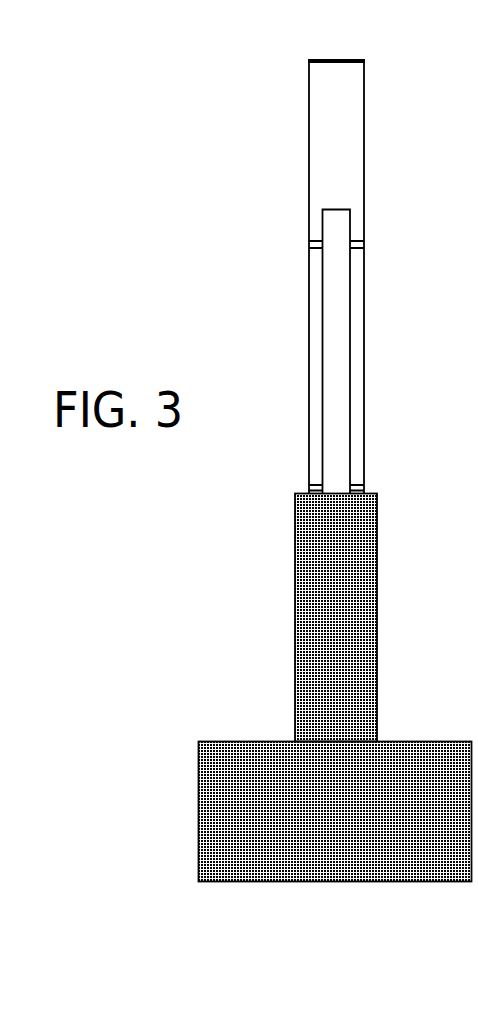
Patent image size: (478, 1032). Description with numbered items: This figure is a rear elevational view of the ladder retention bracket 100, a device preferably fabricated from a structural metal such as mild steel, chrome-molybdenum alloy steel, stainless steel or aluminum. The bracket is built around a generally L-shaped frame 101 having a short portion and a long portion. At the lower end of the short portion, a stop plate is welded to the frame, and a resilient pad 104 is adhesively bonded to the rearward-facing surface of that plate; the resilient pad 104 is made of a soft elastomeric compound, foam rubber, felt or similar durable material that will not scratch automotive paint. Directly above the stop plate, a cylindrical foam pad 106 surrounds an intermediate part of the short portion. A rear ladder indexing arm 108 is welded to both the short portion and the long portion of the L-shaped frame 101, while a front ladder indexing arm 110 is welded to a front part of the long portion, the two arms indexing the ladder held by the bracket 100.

The ladder retention bracket 100 is at (260, 255).
The front ladder indexing arm 110 is at (336, 162).
The L-shaped frame 101 is at (337, 352).
The rear ladder indexing arm 108 is at (357, 377).
The cylindrical foam pad 106 is at (296, 597).
The resilient pad 104 is at (232, 806).